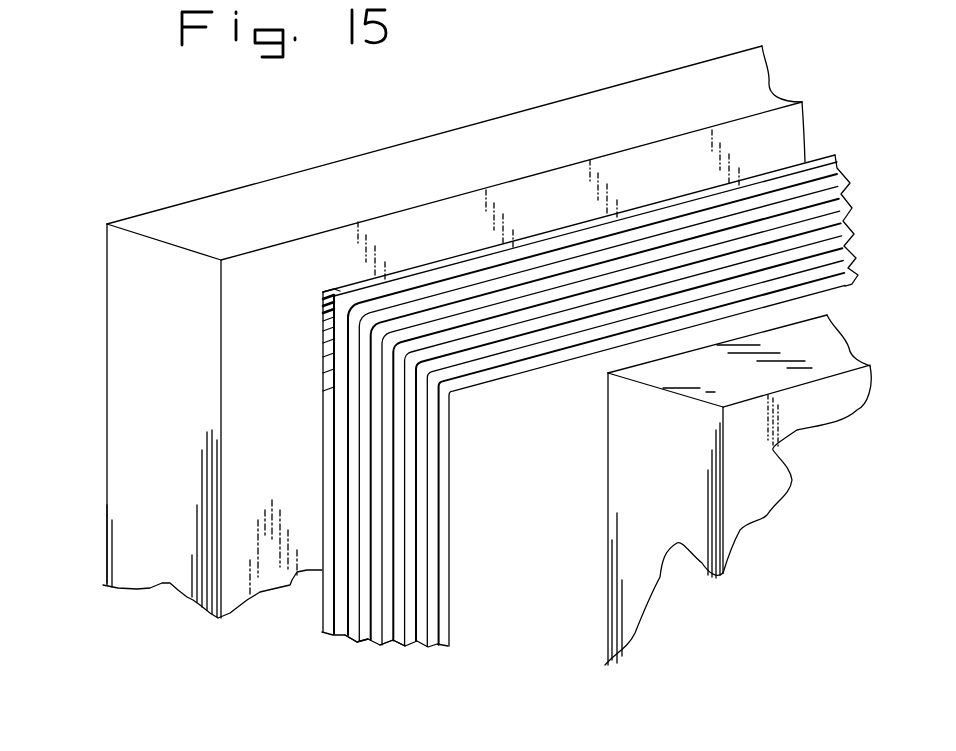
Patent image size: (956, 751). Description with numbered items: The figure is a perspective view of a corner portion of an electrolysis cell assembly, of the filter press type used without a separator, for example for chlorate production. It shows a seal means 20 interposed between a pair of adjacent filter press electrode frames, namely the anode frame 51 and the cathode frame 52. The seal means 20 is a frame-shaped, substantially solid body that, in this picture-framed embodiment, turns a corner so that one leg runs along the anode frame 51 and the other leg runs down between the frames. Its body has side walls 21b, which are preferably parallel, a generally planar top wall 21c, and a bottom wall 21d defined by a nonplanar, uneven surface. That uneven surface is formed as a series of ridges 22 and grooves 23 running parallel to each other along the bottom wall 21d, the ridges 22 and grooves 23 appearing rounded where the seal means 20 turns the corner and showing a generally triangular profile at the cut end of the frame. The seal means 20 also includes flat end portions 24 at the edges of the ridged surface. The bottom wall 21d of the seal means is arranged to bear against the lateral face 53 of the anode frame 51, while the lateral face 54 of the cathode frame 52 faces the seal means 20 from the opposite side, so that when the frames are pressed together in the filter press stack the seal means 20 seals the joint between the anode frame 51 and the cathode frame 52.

The seal means 20 is at (829, 103).
The side walls 21b is at (452, 580).
The top wall 21c is at (645, 207).
The bottom wall 21d is at (832, 275).
The ridges 22 is at (357, 645).
The grooves 23 is at (393, 646).
The flat end portions 24 is at (834, 152).
The anode frame 51 is at (258, 212).
The cathode frame 52 is at (681, 382).
The lateral face of anode frame 53 is at (227, 530).
The lateral face of cathode frame 54 is at (608, 572).